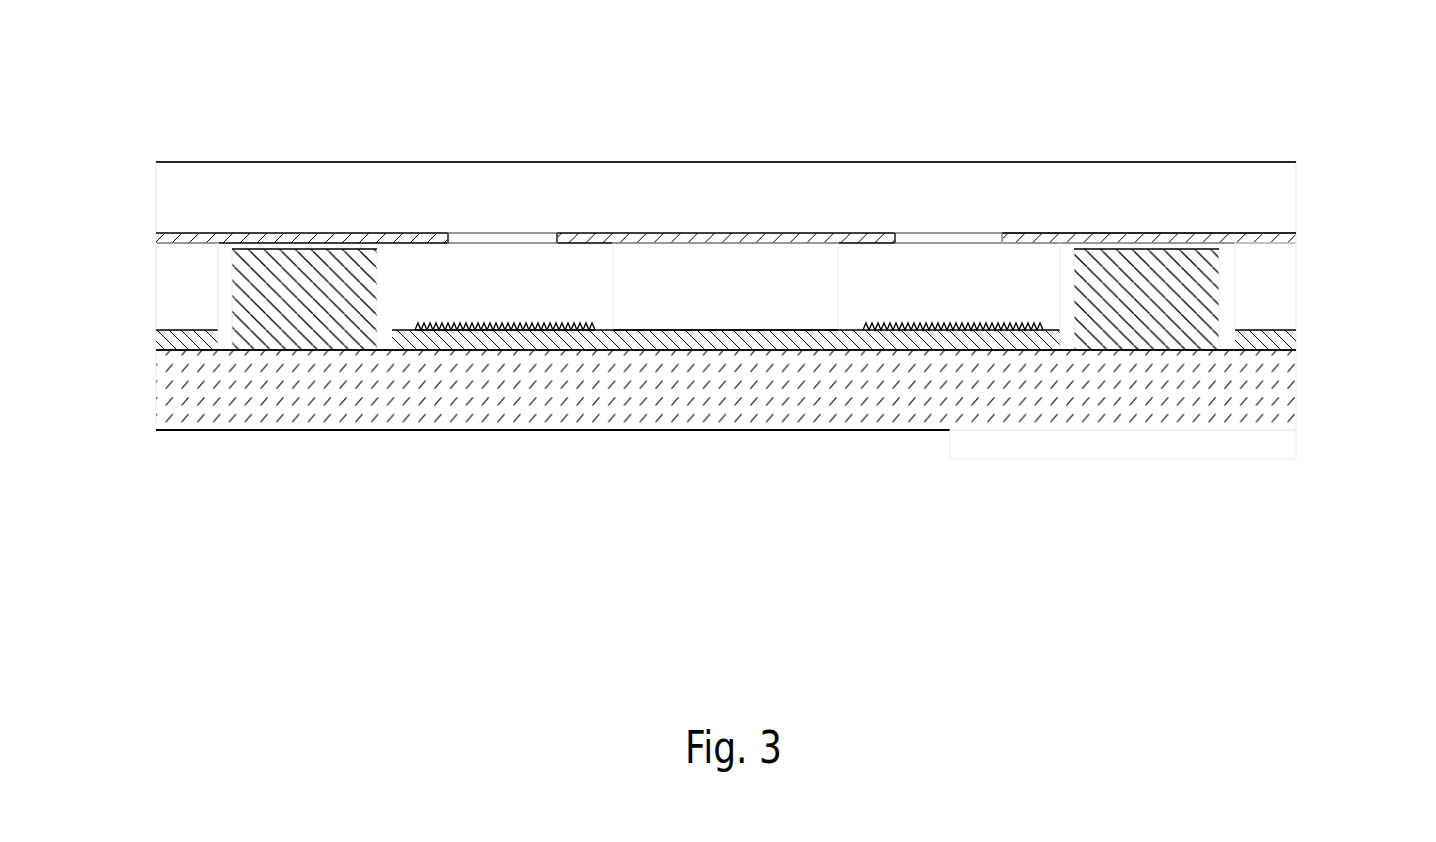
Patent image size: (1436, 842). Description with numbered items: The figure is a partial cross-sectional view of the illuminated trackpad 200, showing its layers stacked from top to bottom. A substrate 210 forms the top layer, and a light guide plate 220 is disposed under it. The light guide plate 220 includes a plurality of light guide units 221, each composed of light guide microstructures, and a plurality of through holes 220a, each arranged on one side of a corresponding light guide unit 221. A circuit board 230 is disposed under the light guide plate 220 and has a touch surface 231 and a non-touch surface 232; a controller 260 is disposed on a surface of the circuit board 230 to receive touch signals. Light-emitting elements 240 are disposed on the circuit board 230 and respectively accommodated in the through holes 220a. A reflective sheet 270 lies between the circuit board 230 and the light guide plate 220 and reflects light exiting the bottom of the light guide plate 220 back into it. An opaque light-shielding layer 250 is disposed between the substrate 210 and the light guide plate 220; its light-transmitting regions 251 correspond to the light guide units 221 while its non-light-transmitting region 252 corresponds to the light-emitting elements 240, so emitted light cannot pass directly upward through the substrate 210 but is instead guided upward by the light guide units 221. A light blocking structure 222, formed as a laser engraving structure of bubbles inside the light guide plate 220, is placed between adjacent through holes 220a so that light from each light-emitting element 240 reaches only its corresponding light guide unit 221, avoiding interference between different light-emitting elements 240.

The illuminated trackpad 200 is at (130, 76).
The substrate 210 is at (1296, 197).
The light guide plate 220 is at (560, 310).
The through hole 220a is at (231, 366).
The light guide unit 221 is at (468, 328).
The light blocking structure 222 is at (157, 287).
The circuit board 230 is at (1296, 385).
The touch surface 231 is at (652, 353).
The non-touch surface 232 is at (740, 432).
The light-emitting element 240 is at (306, 249).
The light-shielding layer 250 is at (1058, 97).
The light-transmitting region 251 is at (983, 237).
The non-light-transmitting region 252 is at (1038, 243).
The controller 260 is at (1296, 438).
The reflective sheet 270 is at (1296, 335).